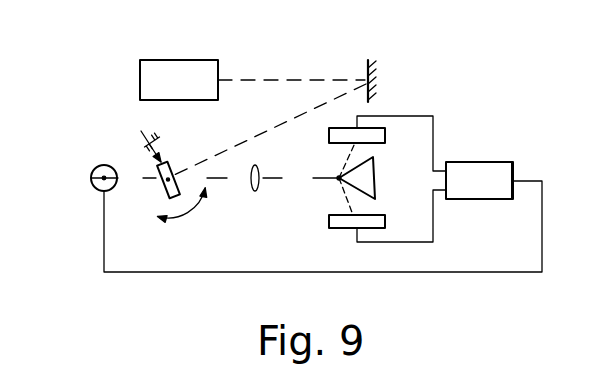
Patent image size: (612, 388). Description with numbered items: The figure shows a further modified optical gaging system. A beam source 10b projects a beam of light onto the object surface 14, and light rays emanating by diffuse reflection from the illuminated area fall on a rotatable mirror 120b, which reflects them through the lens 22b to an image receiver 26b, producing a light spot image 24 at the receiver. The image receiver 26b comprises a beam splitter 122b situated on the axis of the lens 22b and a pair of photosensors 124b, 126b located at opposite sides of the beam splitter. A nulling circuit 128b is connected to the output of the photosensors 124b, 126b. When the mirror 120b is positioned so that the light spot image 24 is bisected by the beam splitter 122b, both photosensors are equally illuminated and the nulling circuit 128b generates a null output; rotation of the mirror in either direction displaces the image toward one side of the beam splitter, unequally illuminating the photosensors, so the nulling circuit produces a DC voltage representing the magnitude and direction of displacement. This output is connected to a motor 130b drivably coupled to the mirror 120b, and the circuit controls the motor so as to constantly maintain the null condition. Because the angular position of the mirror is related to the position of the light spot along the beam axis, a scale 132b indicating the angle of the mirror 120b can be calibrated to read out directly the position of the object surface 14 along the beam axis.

The beam source 10b is at (194, 87).
The object surface 14 is at (368, 74).
The lens 22b is at (253, 190).
The light spot image 24 is at (339, 178).
The image receiver 26b is at (452, 146).
The rotatable mirror 120b is at (163, 196).
The beam splitter 122b is at (372, 188).
The photosensor 124b is at (340, 222).
The photosensor 126b is at (365, 135).
The nulling circuit 128b is at (500, 190).
The motor 130b is at (92, 176).
The scale 132b is at (141, 131).